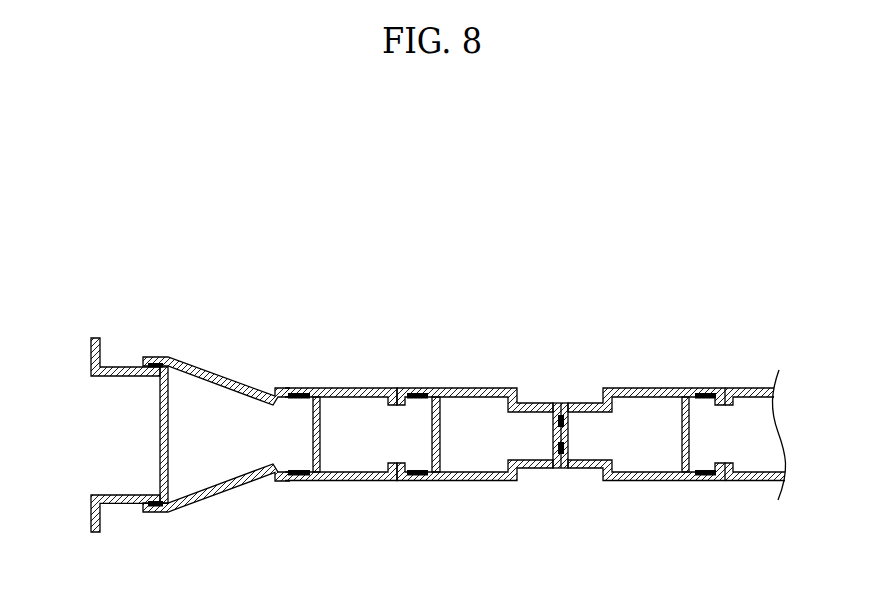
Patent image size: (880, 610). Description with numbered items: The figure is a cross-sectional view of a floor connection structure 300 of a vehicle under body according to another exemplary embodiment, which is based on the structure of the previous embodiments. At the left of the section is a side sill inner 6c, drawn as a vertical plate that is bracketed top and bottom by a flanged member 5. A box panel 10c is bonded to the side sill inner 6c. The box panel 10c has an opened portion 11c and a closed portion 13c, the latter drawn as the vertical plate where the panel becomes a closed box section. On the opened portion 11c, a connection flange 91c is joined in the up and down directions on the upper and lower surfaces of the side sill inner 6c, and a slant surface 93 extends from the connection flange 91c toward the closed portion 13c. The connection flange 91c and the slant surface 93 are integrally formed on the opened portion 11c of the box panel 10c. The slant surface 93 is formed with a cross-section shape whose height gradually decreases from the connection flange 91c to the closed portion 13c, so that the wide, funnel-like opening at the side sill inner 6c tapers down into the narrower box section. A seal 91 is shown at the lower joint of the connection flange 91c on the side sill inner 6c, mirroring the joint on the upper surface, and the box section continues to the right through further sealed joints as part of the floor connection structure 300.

The bracket 5 is at (119, 349).
The side sill inner 6c is at (162, 437).
The box panel 10c is at (320, 374).
The opened portion 11c is at (250, 371).
The closed portion 13c is at (316, 385).
The sealing member 91 is at (153, 508).
The connection flange 91c is at (155, 357).
The slant surface 93 is at (205, 366).
The floor connection structure 300 is at (481, 242).